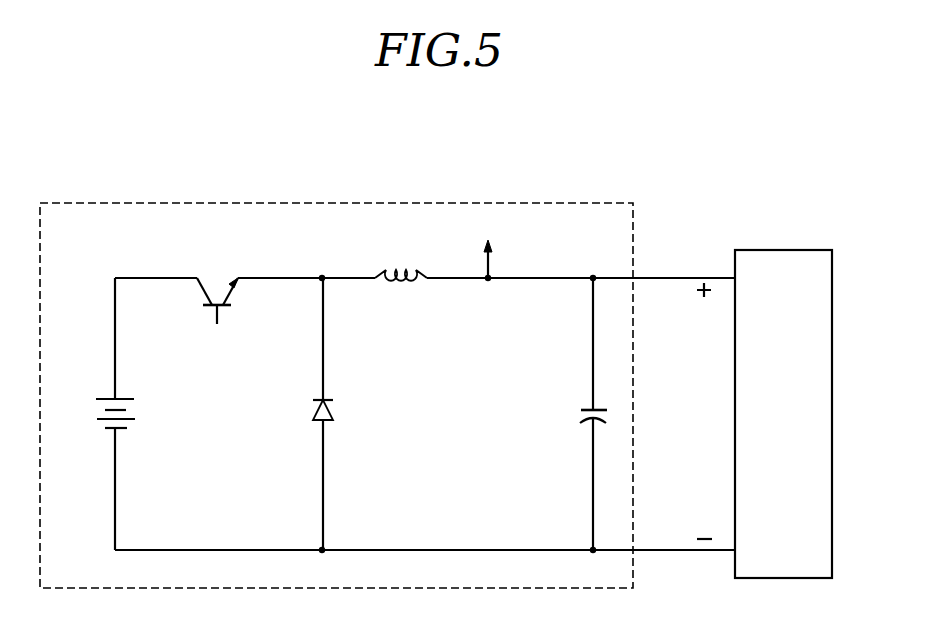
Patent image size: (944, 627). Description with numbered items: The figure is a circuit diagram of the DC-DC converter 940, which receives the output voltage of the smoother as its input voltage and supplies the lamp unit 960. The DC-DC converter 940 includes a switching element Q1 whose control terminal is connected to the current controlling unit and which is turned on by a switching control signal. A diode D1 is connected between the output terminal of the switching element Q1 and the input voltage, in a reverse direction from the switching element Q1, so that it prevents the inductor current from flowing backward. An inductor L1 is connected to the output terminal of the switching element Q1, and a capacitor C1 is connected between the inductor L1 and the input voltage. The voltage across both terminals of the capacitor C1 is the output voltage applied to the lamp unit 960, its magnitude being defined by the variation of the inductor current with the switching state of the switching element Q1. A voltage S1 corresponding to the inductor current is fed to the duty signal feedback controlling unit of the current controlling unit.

The DC-DC converter 940 is at (336, 202).
The lamp unit 960 is at (832, 332).
The switching element Q1 is at (217, 303).
The diode D1 is at (308, 412).
The inductor L1 is at (401, 295).
The voltage corresponding to the inductor current S1 is at (501, 250).
The capacitor C1 is at (579, 416).